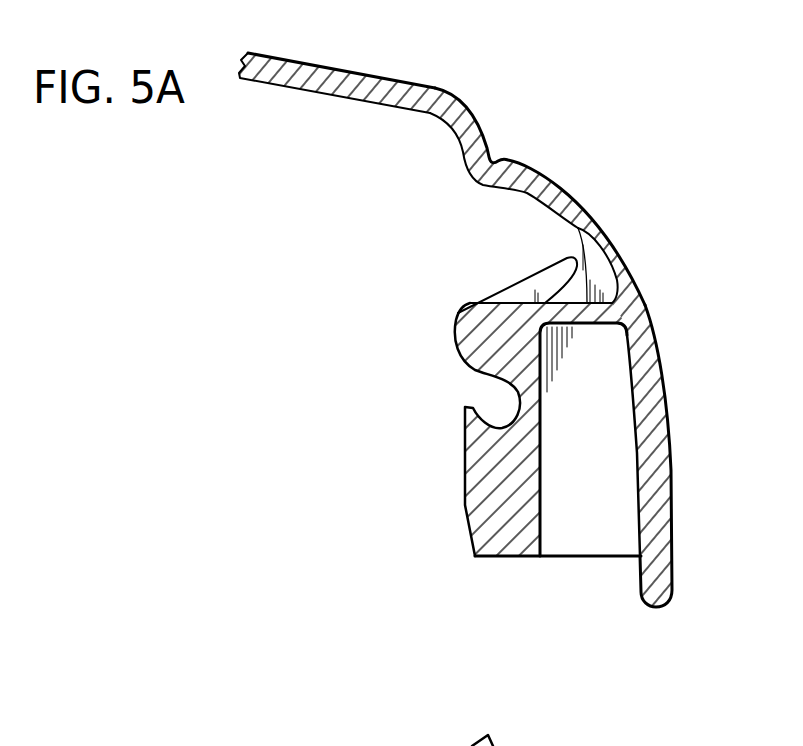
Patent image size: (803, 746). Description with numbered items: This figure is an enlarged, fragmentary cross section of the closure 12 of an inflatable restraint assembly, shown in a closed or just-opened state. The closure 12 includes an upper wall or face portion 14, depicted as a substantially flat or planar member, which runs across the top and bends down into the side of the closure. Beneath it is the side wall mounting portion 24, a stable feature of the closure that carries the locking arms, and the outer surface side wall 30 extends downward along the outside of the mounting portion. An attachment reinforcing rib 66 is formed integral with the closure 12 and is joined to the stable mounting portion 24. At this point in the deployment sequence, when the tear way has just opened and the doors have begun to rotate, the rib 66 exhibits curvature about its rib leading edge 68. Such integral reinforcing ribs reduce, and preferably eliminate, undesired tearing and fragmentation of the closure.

The closure 12 is at (487, 94).
The face portion 14 is at (320, 68).
The side wall mounting portion 24 is at (480, 330).
The outer surface side wall 30 is at (653, 468).
The attachment reinforcing rib 66 is at (590, 243).
The rib leading edge 68 is at (568, 258).